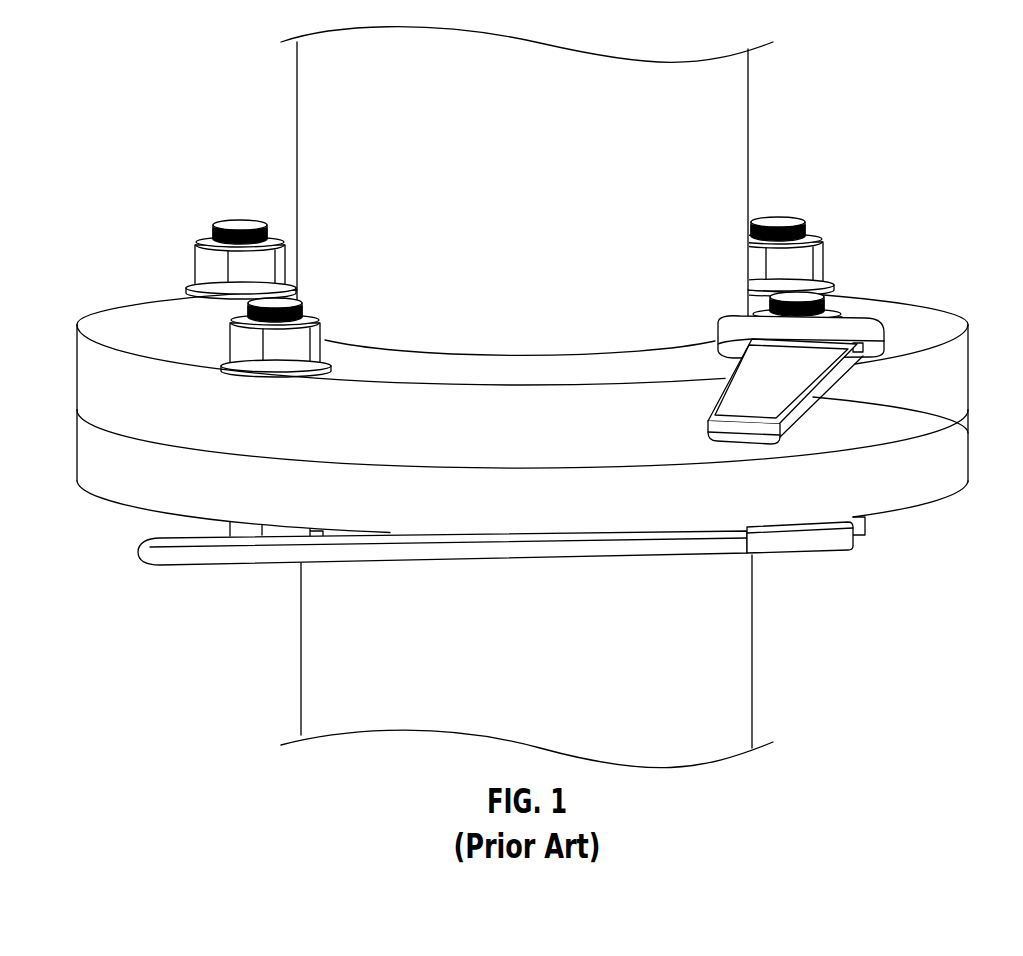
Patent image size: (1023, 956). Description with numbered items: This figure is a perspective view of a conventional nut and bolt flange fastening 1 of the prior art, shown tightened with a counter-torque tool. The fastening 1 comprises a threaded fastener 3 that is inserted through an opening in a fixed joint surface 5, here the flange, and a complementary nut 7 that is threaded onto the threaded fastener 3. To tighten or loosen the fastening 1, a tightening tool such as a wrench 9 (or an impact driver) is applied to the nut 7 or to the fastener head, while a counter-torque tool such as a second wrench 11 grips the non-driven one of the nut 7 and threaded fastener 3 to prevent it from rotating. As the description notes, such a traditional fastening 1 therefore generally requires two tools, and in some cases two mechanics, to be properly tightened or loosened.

The nut and bolt fastening 1 is at (880, 155).
The threaded fastener 3 is at (770, 220).
The fixed joint surface 5 is at (911, 310).
The nut 7 is at (804, 250).
The wrench 9 is at (968, 433).
The second wrench 11 is at (842, 540).